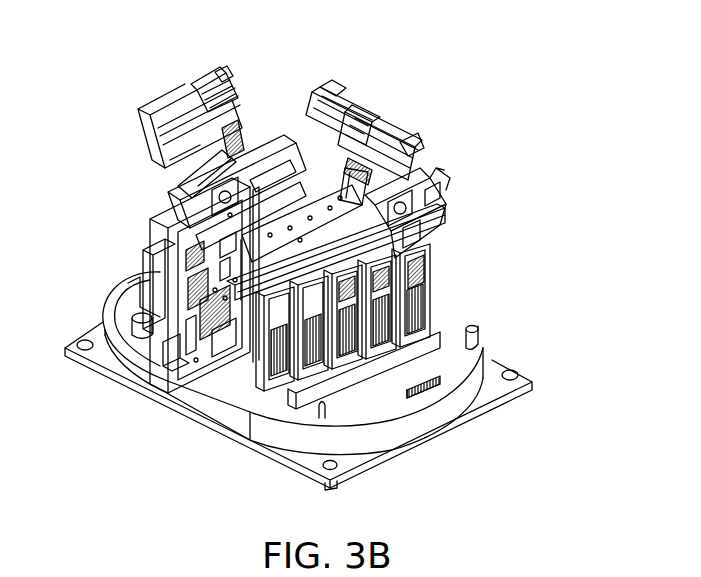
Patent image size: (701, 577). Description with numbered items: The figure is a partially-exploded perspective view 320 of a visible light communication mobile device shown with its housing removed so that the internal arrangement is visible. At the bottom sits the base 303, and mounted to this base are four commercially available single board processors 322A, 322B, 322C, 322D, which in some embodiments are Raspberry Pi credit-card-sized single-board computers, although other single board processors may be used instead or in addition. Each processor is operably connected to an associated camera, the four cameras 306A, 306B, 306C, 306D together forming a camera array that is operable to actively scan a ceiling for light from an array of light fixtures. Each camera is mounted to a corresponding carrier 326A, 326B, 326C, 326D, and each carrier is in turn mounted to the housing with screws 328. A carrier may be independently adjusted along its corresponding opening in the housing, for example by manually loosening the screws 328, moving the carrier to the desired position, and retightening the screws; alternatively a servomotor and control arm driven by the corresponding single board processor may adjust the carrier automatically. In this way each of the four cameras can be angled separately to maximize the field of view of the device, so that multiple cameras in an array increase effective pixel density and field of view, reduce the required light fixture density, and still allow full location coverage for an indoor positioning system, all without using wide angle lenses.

The partially-exploded perspective view 320 is at (440, 52).
The base 303 is at (483, 382).
The camera 306A is at (215, 203).
The camera 306B is at (413, 210).
The camera 306C is at (196, 100).
The camera 306D is at (370, 118).
The single board processor 322A is at (175, 278).
The single board processor 322B is at (355, 338).
The single board processor 322C is at (385, 348).
The single board processor 322D is at (432, 290).
The carrier 326A is at (240, 240).
The carrier 326B is at (431, 277).
The carrier 326C is at (155, 135).
The carrier 326D is at (410, 155).
The screws 328 is at (258, 190).